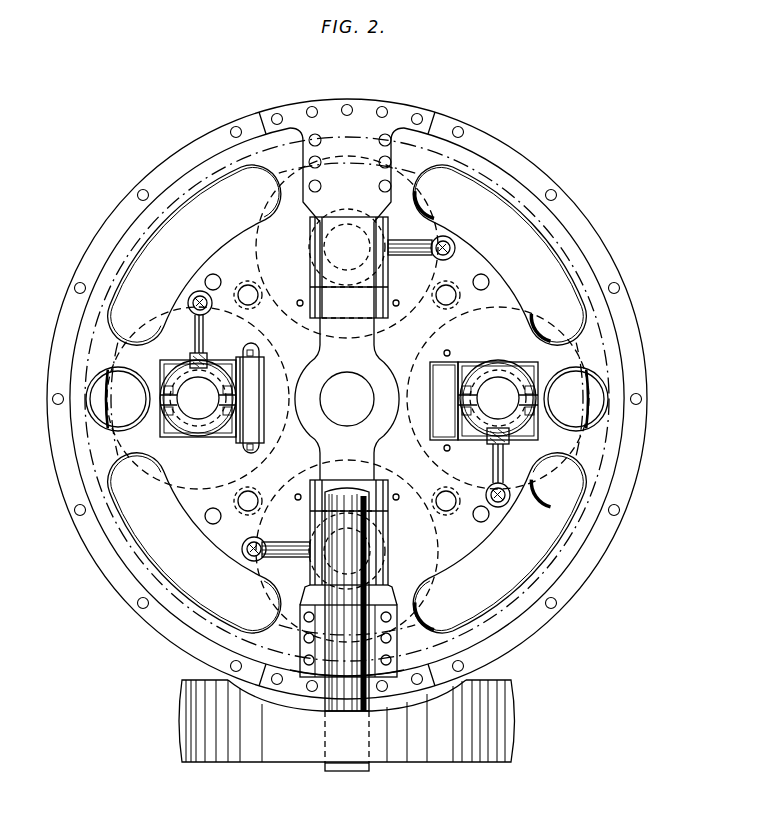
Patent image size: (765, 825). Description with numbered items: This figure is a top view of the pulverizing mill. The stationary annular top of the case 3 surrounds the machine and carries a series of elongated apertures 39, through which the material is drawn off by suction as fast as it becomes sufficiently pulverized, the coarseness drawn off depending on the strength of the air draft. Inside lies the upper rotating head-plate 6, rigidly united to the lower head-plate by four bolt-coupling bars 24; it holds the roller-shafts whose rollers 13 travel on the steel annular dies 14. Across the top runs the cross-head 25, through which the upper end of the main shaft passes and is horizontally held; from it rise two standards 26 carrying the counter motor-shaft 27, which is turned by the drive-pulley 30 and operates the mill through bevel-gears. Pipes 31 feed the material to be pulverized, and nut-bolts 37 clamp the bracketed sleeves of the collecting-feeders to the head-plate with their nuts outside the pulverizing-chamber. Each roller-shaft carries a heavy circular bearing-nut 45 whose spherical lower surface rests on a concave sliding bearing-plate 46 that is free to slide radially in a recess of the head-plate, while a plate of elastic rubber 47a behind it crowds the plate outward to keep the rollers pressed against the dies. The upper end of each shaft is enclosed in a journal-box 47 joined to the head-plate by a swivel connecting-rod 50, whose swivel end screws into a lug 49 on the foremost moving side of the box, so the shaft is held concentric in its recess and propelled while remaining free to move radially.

The annular top of the case 3 is at (60, 353).
The upper rotating head-plate 6 is at (237, 276).
The rollers 13 is at (432, 193).
The annular dies 14 is at (95, 440).
The bolt-coupling bars 24 is at (253, 304).
The cross-head 25 is at (347, 304).
The standards 26 is at (300, 646).
The counter motor-shaft 27 is at (345, 771).
The drive-pulley 30 is at (514, 725).
The feed pipes 31 is at (347, 399).
The nut-bolts 37 is at (451, 258).
The elongated apertures 39 is at (347, 399).
The circular bearing-nut 45 is at (212, 368).
The sliding bearing-plate 46 is at (248, 438).
The journal-boxes 47 is at (199, 431).
The plate of elastic rubber 47a is at (384, 303).
The lug 49 is at (199, 355).
The swivel connecting-rods 50 is at (205, 340).